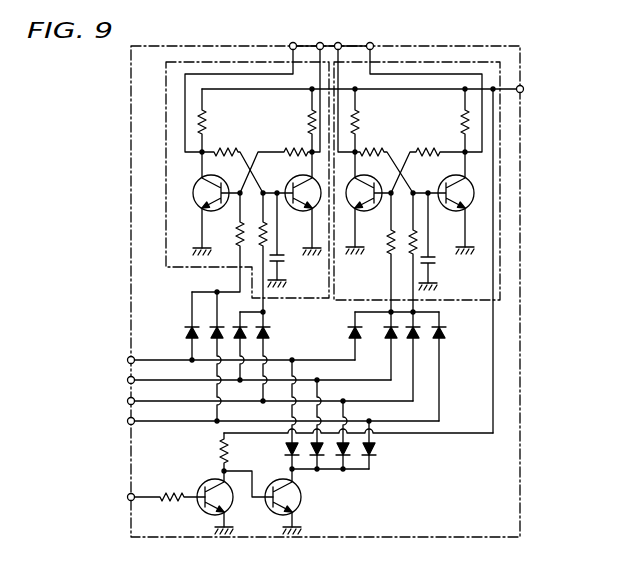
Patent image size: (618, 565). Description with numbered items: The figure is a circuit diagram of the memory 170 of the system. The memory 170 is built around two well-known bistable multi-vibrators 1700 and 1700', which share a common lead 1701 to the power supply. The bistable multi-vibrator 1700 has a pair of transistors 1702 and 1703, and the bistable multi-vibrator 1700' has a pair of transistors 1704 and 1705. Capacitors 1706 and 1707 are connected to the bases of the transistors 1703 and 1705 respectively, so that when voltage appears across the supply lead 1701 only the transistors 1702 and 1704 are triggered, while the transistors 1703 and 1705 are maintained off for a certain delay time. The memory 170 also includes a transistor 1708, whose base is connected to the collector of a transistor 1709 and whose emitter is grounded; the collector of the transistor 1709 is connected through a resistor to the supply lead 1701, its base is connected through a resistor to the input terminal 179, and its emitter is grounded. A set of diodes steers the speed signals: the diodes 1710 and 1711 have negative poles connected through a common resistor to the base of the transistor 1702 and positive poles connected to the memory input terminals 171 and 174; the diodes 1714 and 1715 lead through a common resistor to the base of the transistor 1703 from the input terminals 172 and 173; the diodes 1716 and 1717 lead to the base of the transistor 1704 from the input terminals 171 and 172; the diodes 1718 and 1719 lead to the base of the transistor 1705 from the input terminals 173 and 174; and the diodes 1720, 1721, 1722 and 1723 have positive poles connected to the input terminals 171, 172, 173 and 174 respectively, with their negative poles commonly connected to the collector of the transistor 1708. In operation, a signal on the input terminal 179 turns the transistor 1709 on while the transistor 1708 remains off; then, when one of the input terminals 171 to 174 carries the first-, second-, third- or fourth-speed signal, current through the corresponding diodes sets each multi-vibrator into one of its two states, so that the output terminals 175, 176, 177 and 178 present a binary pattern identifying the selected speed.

The memory 170 is at (130, 105).
The bistable multi-vibrator 1700 is at (247, 154).
The bistable multi-vibrator 1700' is at (428, 155).
The common lead 1701 is at (425, 89).
The transistor 1702 is at (193, 186).
The transistor 1703 is at (286, 183).
The transistor 1704 is at (372, 182).
The transistor 1705 is at (474, 194).
The capacitor 1706 is at (287, 259).
The capacitor 1707 is at (436, 260).
The transistor 1708 is at (296, 512).
The transistor 1709 is at (205, 485).
The diode 1710 is at (190, 336).
The diode 1711 is at (213, 324).
The diode 1714 is at (243, 336).
The diode 1715 is at (269, 323).
The diode 1716 is at (362, 296).
The diode 1717 is at (394, 335).
The diode 1718 is at (418, 335).
The diode 1719 is at (447, 333).
The diode 1720 is at (297, 449).
The diode 1721 is at (319, 459).
The diode 1722 is at (346, 461).
The diode 1723 is at (380, 452).
The memory input terminal 171 is at (222, 358).
The memory input terminal 172 is at (240, 379).
The memory input terminal 173 is at (251, 399).
The memory input terminal 174 is at (264, 419).
The output terminal 175 is at (291, 44).
The output terminal 176 is at (318, 43).
The output terminal 177 is at (339, 43).
The output terminal 178 is at (372, 43).
The input terminal 179 is at (147, 496).